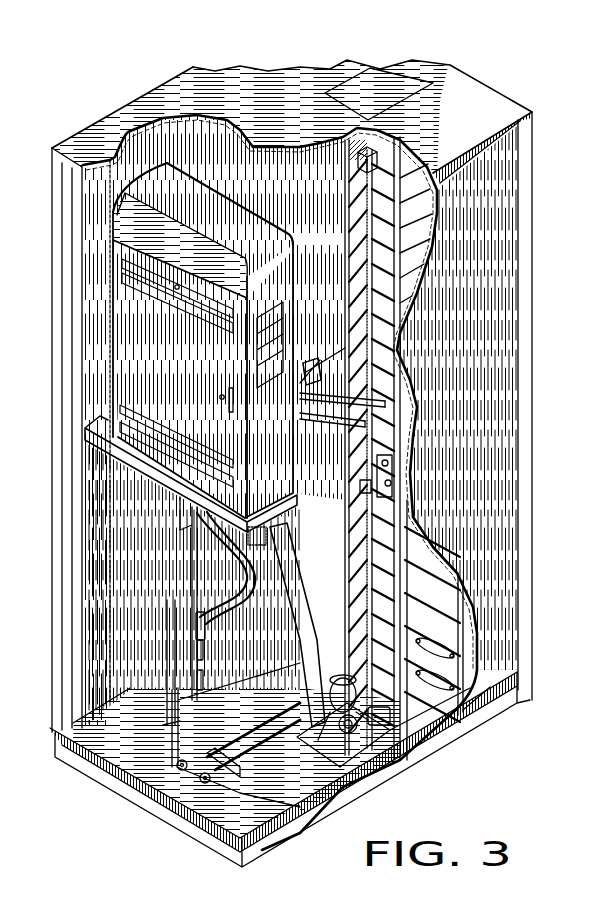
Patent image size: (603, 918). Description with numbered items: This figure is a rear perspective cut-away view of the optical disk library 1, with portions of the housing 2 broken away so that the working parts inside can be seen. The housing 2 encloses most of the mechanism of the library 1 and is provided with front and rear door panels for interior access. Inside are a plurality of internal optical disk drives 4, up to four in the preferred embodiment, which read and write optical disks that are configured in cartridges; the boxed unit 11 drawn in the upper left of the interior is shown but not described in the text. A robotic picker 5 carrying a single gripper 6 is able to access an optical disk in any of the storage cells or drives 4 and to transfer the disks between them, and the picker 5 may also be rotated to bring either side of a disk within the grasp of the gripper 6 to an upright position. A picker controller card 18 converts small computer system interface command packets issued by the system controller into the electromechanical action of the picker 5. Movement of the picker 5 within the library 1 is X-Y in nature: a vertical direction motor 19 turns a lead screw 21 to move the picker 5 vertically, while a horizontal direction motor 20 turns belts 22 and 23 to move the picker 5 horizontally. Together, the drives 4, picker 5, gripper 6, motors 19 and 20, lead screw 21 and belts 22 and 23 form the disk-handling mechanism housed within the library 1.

The library 1 is at (567, 181).
The housing 2 is at (530, 111).
The optical disk drives 4 is at (440, 682).
The robotic picker 5 is at (318, 372).
The gripper 6 is at (312, 371).
The instrument module 11 is at (191, 431).
The picker controller card 18 is at (180, 693).
The vertical direction motor 19 is at (280, 704).
The horizontal direction motor 20 is at (388, 768).
The lead screw 21 is at (383, 447).
The belt 22 is at (397, 520).
The belt 23 is at (340, 405).